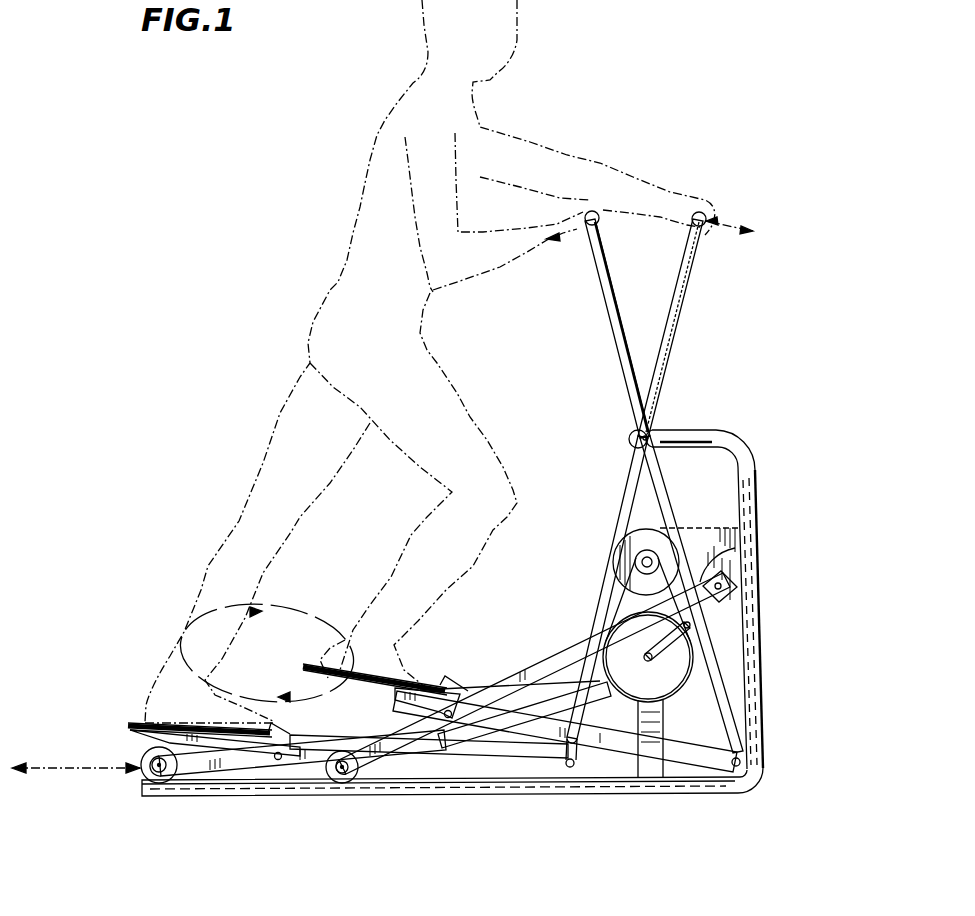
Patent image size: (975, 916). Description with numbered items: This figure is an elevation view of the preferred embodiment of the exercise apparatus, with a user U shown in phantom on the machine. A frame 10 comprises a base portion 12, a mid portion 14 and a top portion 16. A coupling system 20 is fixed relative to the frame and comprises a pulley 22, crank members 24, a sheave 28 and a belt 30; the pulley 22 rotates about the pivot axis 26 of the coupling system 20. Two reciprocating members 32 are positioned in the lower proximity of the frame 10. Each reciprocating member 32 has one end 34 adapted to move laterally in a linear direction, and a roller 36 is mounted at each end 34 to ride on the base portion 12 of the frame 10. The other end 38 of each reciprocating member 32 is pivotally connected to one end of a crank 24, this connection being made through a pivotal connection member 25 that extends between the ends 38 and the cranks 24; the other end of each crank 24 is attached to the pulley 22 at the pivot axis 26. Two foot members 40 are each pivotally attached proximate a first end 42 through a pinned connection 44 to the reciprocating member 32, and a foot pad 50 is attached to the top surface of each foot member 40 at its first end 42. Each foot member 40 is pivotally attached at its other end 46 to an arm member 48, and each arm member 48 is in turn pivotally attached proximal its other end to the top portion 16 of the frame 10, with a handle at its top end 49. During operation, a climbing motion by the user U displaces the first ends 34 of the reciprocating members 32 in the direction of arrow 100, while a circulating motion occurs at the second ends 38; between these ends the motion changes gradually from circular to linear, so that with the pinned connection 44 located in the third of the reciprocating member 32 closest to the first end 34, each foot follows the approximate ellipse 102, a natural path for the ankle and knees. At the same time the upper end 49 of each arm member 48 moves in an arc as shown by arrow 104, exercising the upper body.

The frame 10 is at (485, 617).
The base portion 12 is at (340, 798).
The mid portion 14 is at (757, 468).
The top portion 16 is at (697, 430).
The coupling system 20 is at (700, 665).
The pulley 22 is at (602, 640).
The crank member 24 is at (668, 637).
The pivotal connection member 25 is at (722, 584).
The pivot axis 26 is at (632, 530).
The sheave 28 is at (636, 558).
The belt 30 is at (622, 598).
The reciprocating member 32 is at (254, 757).
The end of reciprocating member 34 is at (170, 772).
The roller 36 is at (150, 770).
The other end of reciprocating member 38 is at (705, 576).
The foot member 40 is at (548, 762).
The first end of foot member 42 is at (218, 742).
The pinned connection 44 is at (280, 760).
The other end of foot member 46 is at (580, 762).
The arm member 48 is at (675, 310).
The top end of arm member 49 is at (596, 211).
The foot pad 50 is at (135, 722).
The arrow 100 is at (110, 767).
The approximate ellipse 102 is at (215, 620).
The arrow 104 is at (742, 226).
The user U is at (328, 292).